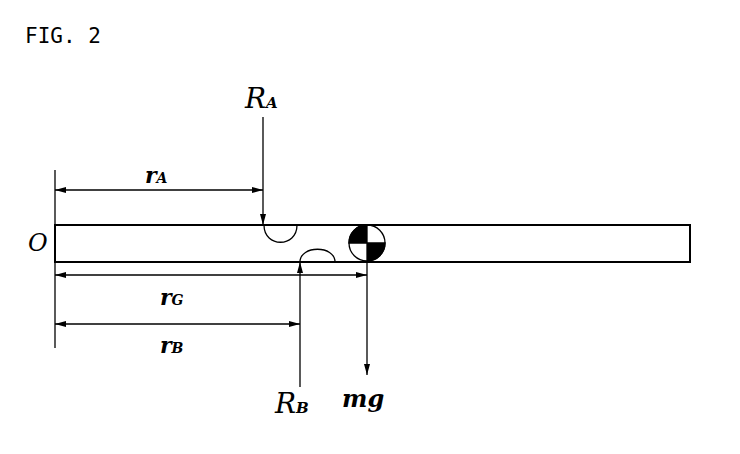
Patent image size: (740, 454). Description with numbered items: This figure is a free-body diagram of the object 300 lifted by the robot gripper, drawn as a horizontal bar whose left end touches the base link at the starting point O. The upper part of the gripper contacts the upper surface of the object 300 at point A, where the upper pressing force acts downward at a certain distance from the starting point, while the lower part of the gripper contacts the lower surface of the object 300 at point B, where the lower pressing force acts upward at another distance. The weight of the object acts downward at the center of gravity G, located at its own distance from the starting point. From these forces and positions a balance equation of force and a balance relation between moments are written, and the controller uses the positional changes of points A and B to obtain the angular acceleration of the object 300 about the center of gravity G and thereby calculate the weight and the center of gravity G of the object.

The object 300 is at (552, 245).
The point A is at (297, 225).
The point B is at (335, 262).
The center of gravity G is at (373, 227).